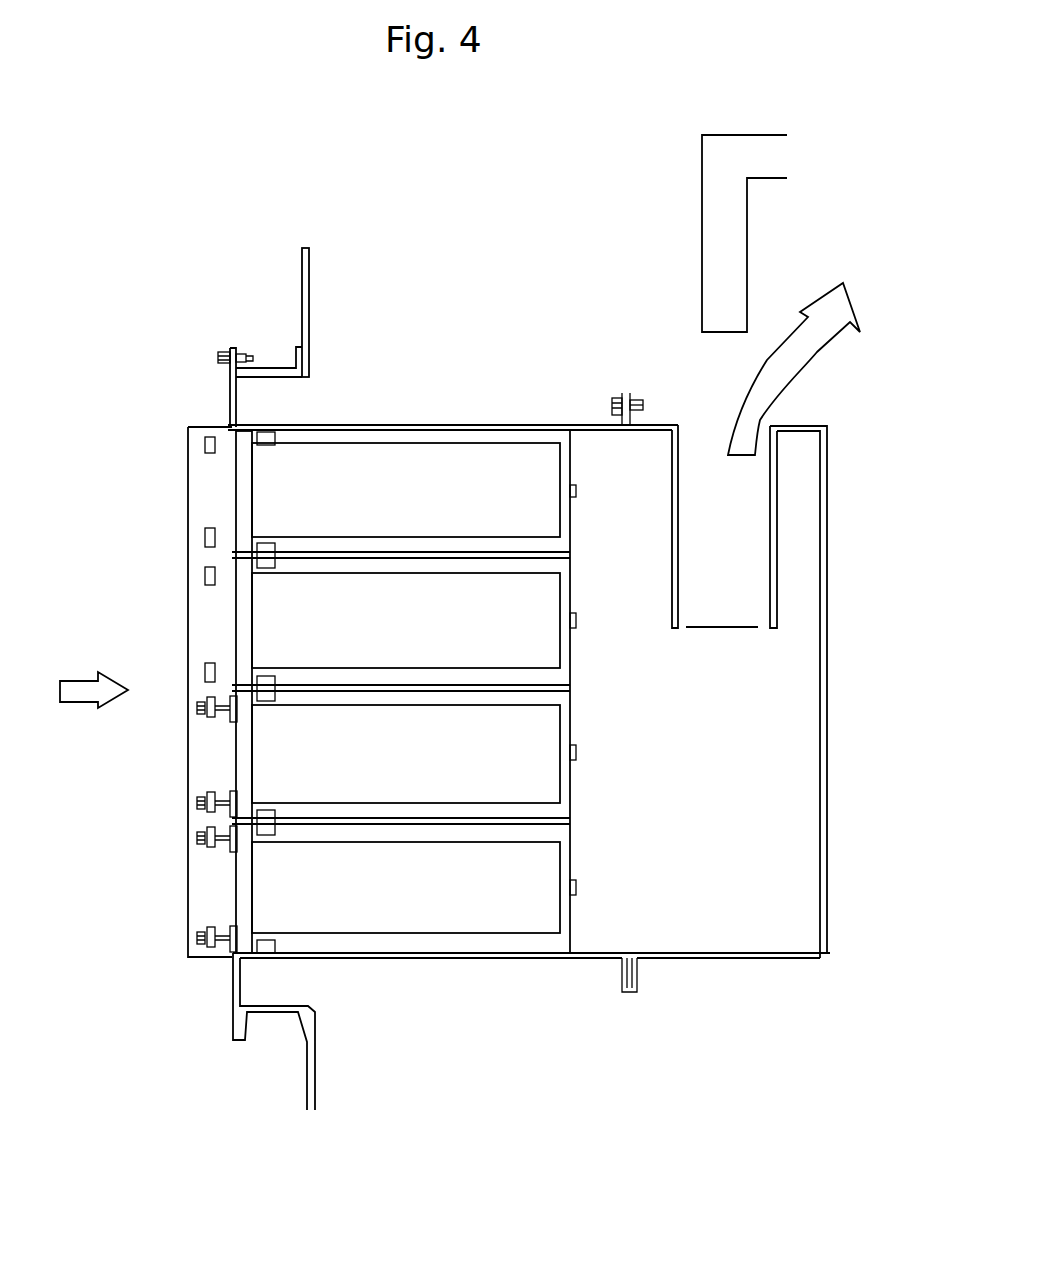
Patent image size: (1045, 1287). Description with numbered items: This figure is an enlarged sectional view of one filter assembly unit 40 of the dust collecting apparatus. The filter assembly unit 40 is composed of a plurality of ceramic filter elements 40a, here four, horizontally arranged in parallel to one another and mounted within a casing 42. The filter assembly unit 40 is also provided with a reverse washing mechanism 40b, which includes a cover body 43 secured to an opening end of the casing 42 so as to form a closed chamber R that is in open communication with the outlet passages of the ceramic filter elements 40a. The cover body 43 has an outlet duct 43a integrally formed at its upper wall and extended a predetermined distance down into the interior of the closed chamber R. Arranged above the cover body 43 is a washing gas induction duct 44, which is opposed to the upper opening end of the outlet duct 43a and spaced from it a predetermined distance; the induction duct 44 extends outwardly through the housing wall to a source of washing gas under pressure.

The filter assembly unit 40 is at (215, 478).
The ceramic filter element 40a is at (422, 467).
The reverse washing mechanism 40b is at (693, 392).
The casing 42 is at (512, 425).
The cover body 43 is at (827, 795).
The outlet duct 43a is at (777, 562).
The washing gas induction duct 44 is at (700, 218).
The closed chamber R is at (714, 806).